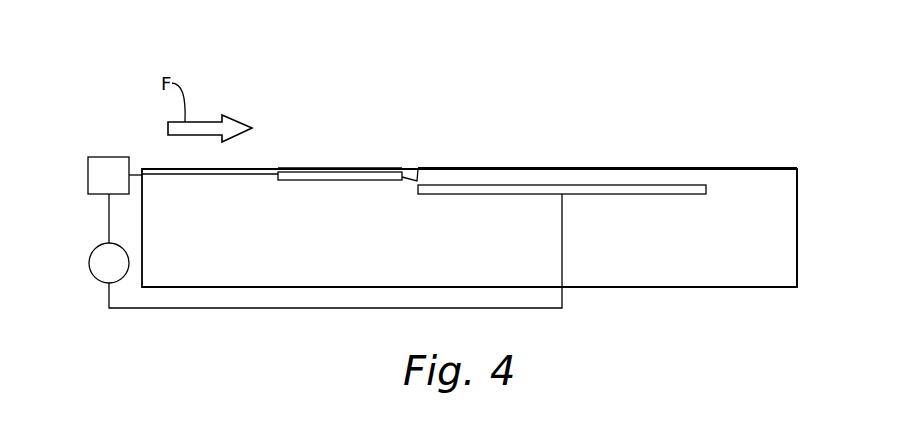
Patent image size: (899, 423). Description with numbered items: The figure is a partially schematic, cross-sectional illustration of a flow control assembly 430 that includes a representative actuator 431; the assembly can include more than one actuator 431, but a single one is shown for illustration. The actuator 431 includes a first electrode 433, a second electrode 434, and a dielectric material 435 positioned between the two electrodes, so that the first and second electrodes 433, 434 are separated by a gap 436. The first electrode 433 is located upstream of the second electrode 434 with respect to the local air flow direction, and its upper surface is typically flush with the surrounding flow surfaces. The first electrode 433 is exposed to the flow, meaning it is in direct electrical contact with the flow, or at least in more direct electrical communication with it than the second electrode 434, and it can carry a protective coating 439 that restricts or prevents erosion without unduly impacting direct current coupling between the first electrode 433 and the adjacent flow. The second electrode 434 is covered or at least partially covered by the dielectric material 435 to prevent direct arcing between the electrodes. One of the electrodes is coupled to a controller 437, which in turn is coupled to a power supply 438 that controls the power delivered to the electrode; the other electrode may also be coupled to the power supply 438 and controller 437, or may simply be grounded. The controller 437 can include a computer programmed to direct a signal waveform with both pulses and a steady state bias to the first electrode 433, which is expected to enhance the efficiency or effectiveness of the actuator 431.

The flow control assembly 430 is at (586, 84).
The actuator 431 is at (508, 162).
The first electrode 433 is at (347, 175).
The second electrode 434 is at (633, 187).
The dielectric material 435 is at (760, 190).
The gap 436 is at (416, 178).
The controller 437 is at (87, 175).
The power supply 438 is at (89, 268).
The protective coating 439 is at (295, 168).